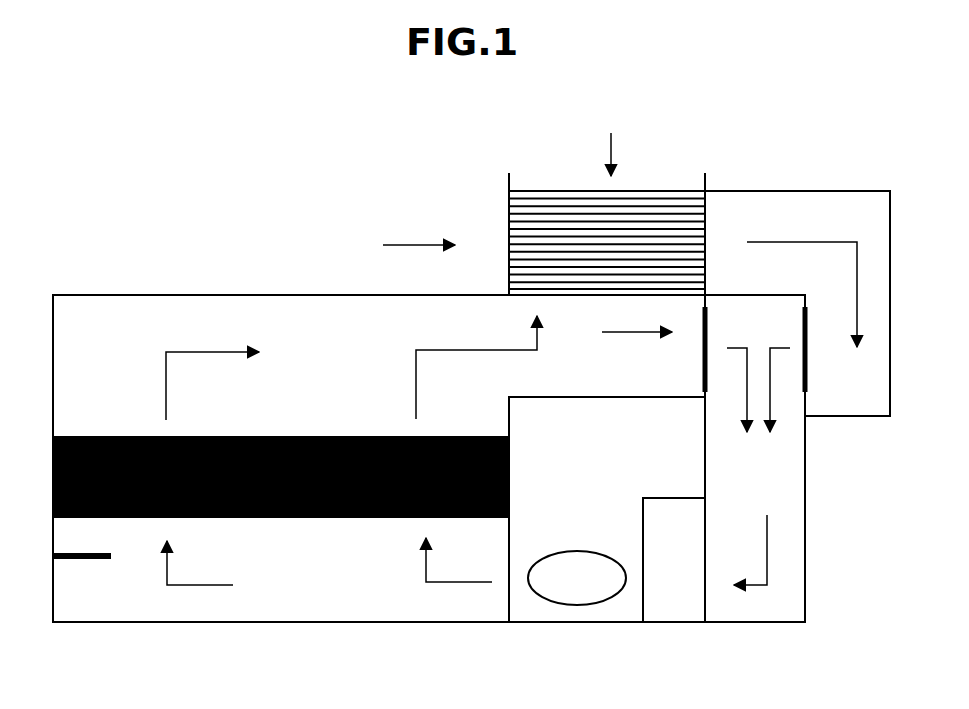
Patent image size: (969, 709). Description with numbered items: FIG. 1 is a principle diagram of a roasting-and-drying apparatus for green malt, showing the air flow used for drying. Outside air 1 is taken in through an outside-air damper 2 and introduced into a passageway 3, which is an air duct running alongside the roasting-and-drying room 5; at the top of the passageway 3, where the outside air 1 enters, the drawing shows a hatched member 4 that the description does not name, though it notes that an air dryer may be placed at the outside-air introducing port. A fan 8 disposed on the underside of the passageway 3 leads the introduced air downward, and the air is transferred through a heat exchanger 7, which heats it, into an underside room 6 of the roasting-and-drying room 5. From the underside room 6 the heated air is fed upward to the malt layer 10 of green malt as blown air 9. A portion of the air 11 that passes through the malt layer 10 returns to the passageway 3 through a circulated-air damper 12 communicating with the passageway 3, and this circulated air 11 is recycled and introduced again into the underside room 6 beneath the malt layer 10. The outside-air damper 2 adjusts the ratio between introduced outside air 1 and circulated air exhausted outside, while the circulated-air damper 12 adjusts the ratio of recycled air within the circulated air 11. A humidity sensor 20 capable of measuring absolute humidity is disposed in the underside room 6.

The outside air 1 is at (419, 223).
The outside-air damper 2 is at (809, 348).
The passageway 3 is at (850, 530).
The filter unit 4 is at (607, 214).
The roasting-and-drying room 5 is at (281, 365).
The underside room 6 is at (203, 599).
The heat exchanger 7 is at (674, 560).
The fan 8 is at (577, 578).
The blown air 9 is at (329, 561).
The malt layer 10 is at (268, 436).
The circulated air 11 is at (458, 367).
The circulated-air damper 12 is at (700, 347).
The humidity sensor 20 is at (66, 563).